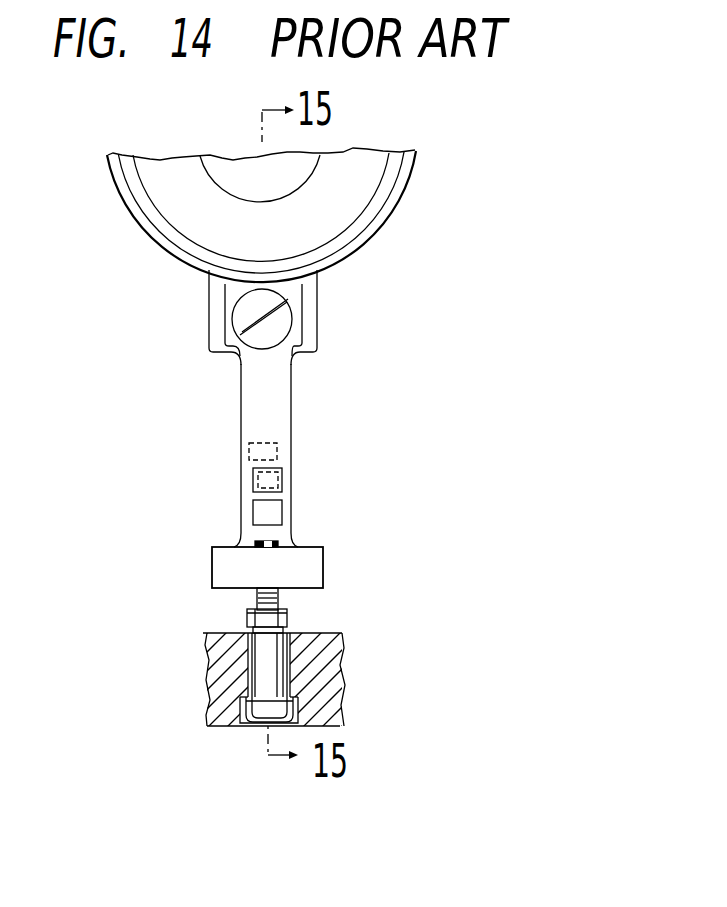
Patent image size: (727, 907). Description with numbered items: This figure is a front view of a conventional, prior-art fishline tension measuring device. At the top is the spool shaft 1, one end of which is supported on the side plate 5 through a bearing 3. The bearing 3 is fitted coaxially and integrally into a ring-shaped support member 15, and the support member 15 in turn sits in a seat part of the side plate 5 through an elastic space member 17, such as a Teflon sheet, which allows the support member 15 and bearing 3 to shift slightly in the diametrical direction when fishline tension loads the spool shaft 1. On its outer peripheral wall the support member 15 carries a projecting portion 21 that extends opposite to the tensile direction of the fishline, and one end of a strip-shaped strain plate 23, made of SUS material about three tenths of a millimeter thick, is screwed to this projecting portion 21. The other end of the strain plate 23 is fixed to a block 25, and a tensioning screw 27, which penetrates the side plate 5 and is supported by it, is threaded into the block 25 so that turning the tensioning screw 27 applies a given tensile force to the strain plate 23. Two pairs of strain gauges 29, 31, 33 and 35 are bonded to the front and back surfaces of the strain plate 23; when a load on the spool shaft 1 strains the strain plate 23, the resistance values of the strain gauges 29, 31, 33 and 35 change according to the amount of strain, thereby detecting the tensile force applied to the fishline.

The spool shaft 1 is at (246, 154).
The bearing 3 is at (294, 208).
The side plate 5 is at (274, 657).
The support member 15 is at (257, 228).
The elastic space member 17 is at (254, 215).
The projecting portion 21 is at (237, 317).
The strain plate 23 is at (239, 455).
The block 25 is at (236, 560).
The tensioning screw 27 is at (220, 655).
The strain gauge 29 is at (302, 465).
The strain gauge 31 is at (303, 504).
The strain gauge 33 is at (249, 451).
The strain gauge 35 is at (253, 479).